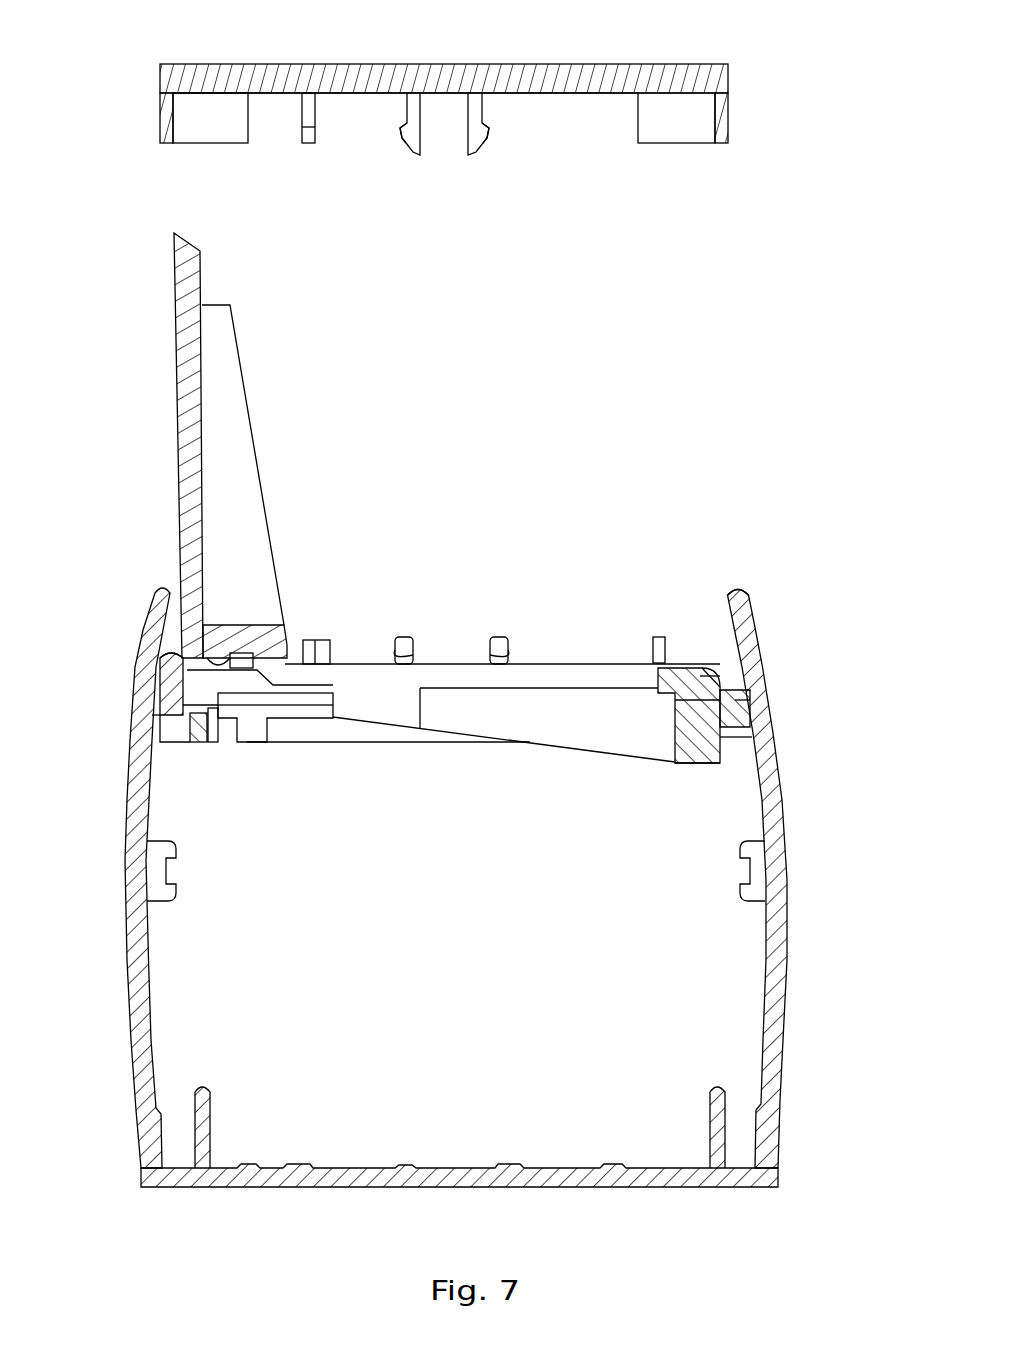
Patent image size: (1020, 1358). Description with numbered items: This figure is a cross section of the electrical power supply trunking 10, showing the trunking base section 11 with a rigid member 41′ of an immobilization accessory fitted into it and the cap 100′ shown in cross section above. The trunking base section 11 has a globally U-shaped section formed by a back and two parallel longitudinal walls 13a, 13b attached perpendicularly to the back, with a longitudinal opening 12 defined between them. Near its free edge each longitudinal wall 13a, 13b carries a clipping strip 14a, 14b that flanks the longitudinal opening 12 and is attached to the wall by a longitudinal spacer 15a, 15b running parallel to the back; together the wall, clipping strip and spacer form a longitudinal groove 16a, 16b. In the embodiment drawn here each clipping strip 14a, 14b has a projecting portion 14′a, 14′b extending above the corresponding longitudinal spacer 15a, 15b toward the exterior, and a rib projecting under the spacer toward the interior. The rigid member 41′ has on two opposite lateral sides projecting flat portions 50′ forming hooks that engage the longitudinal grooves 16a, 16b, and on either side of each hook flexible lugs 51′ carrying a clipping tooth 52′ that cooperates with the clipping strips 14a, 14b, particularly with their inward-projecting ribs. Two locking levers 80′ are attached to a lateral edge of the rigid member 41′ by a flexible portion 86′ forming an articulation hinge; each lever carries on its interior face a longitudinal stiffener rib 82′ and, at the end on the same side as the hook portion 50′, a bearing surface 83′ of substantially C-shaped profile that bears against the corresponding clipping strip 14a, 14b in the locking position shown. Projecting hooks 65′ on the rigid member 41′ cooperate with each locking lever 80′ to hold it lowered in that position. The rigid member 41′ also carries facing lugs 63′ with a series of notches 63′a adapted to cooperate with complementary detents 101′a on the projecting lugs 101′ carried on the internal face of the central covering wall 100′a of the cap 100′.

The electrical power supply trunking 10 is at (460, 923).
The trunking base section 11 is at (708, 1190).
The longitudinal opening 12 is at (730, 648).
The longitudinal wall 13a is at (788, 888).
The longitudinal wall 13b is at (126, 972).
The clipping strip 14a is at (734, 690).
The clipping strip 14b is at (333, 705).
The projecting portion 14′a is at (720, 712).
The projecting portion 14′b is at (208, 705).
The longitudinal spacer 15a is at (738, 742).
The longitudinal spacer 15b is at (175, 744).
The longitudinal groove 16a is at (770, 708).
The longitudinal groove 16b is at (152, 716).
The rigid member 41′ is at (572, 660).
The projecting flat portion 50′ is at (166, 680).
The flexible lug 51′ is at (222, 745).
The clipping tooth 52′ is at (200, 745).
The lug 63′ is at (400, 637).
The notch 63′a is at (490, 652).
The projecting hook 65′ is at (318, 640).
The locking lever 80′ is at (170, 447).
The longitudinal stiffener rib 82′ is at (240, 410).
The bearing surface 83′ is at (243, 642).
The flexible portion 86′ is at (160, 658).
The cap 100′ is at (624, 58).
The central covering wall 100′a is at (490, 64).
The projecting lug 101′ is at (468, 158).
The detent 101′a is at (407, 140).